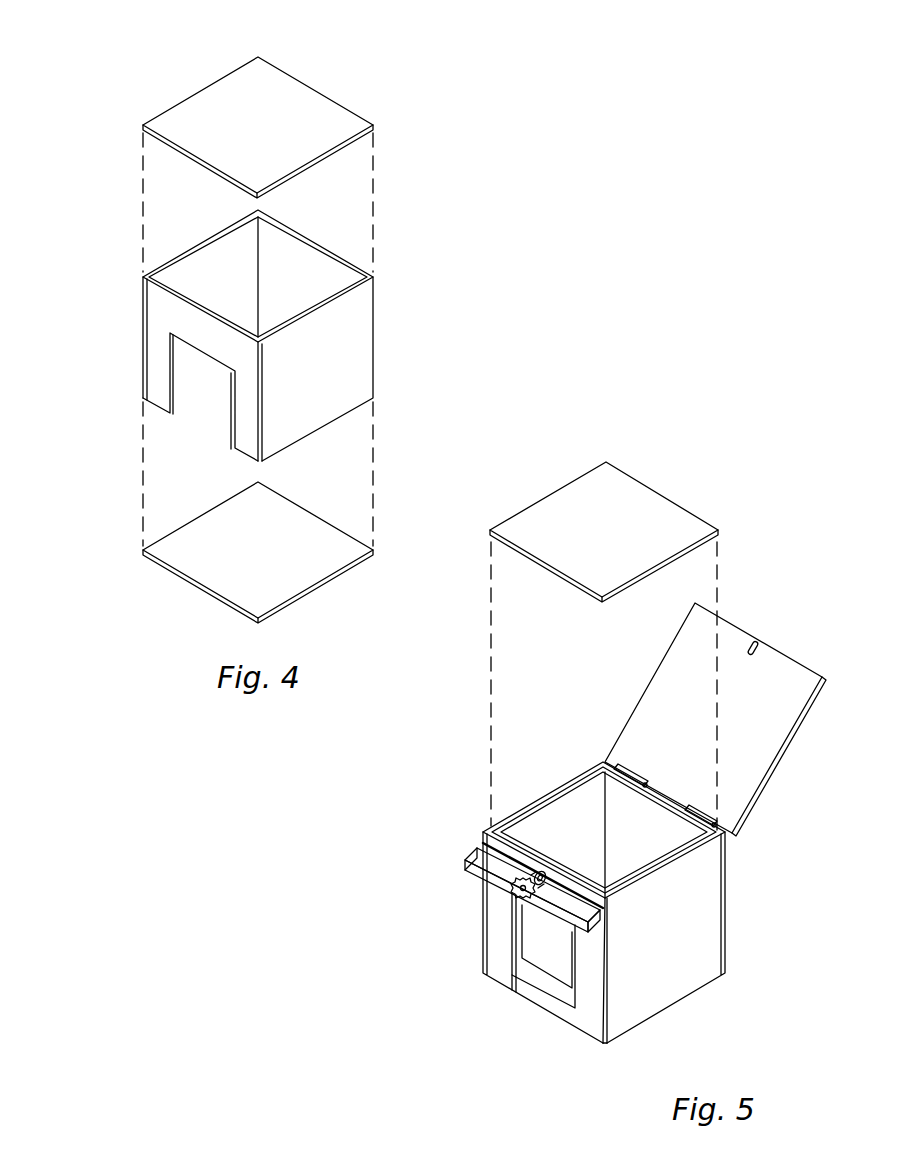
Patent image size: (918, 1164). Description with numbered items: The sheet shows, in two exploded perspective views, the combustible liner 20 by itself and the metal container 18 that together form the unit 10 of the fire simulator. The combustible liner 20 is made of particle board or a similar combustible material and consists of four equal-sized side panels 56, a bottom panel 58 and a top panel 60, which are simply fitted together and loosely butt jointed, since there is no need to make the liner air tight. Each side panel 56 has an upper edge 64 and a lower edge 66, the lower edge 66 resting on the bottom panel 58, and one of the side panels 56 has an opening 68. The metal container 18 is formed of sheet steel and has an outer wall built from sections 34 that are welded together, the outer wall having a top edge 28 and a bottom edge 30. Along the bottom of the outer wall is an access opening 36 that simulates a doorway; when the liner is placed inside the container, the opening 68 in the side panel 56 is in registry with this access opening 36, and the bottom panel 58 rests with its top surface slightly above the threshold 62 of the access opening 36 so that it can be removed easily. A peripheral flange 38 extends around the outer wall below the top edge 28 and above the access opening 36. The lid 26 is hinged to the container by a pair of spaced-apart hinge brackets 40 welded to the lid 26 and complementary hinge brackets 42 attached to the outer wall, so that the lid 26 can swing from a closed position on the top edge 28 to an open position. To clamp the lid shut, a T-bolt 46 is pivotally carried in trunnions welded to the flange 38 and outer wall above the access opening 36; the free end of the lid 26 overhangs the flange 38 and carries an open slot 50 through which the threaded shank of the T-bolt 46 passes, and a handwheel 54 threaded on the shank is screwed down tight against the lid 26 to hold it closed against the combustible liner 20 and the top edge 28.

In FIG. 5, the unit 10 is at (502, 437).
In FIG. 5, the metal container 18 is at (567, 1037).
In FIG. 4, the combustible liner 20 is at (158, 27).
In FIG. 5, the lid 26 is at (740, 698).
In FIG. 5, the top edge 28 is at (617, 878).
In FIG. 5, the bottom edge 30 is at (606, 1045).
In FIG. 5, the sections 34 is at (593, 988).
In FIG. 5, the access opening 36 is at (517, 995).
In FIG. 5, the peripheral flange 38 is at (468, 862).
In FIG. 5, the hinge brackets 40 is at (627, 760).
In FIG. 5, the complementary hinge brackets 42 is at (641, 772).
In FIG. 5, the T-bolt 46 is at (535, 860).
In FIG. 5, the open slot 50 is at (758, 640).
In FIG. 5, the handwheel 54 is at (527, 898).
In FIG. 4, the side panels 56 is at (309, 336).
In FIG. 4, the bottom panel 58 is at (317, 587).
In FIG. 4, the top panel 60 is at (318, 89).
In FIG. 5, the threshold 62 is at (542, 990).
In FIG. 4, the upper edge 64 is at (283, 218).
In FIG. 4, the lower edge 66 is at (317, 430).
In FIG. 4, the opening 68 is at (175, 370).
In FIG. 5, the opening 68 is at (512, 945).